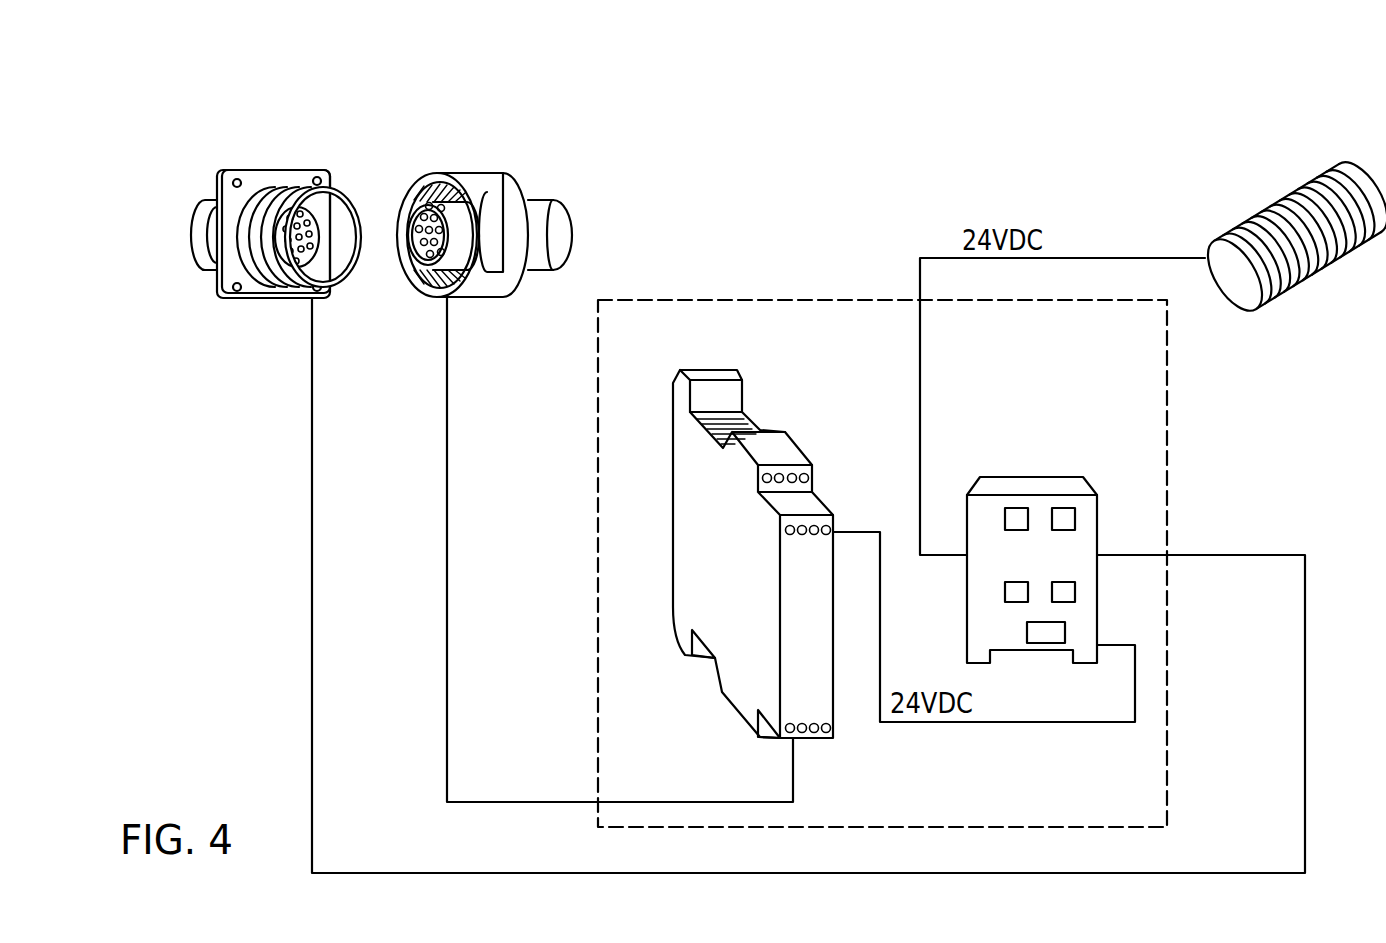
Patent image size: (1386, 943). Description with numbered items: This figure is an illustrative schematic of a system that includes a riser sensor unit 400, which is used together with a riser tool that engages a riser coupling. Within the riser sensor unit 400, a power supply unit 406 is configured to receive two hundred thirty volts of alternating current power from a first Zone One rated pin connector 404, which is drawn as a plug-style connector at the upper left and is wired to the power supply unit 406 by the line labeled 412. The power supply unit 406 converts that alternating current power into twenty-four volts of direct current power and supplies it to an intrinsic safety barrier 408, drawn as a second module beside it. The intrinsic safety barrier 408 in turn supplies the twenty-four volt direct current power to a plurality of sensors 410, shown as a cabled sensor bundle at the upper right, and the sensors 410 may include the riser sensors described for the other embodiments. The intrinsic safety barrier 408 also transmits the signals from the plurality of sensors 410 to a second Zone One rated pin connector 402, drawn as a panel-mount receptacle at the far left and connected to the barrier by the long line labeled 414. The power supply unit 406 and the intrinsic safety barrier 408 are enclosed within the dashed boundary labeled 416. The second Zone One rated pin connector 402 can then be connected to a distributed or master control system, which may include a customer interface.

The riser sensor unit 400 is at (1170, 67).
The second Zone 1 rated pin connector 402 is at (272, 170).
The first Zone 1 rated pin connector 404 is at (472, 172).
The power supply unit 406 is at (738, 397).
The intrinsic safety (IS) barrier 408 is at (1033, 475).
The plurality of sensors 410 is at (1283, 200).
The 230VAC power wire 412 is at (447, 474).
The wire 414 is at (512, 873).
The enclosure 416 is at (967, 827).